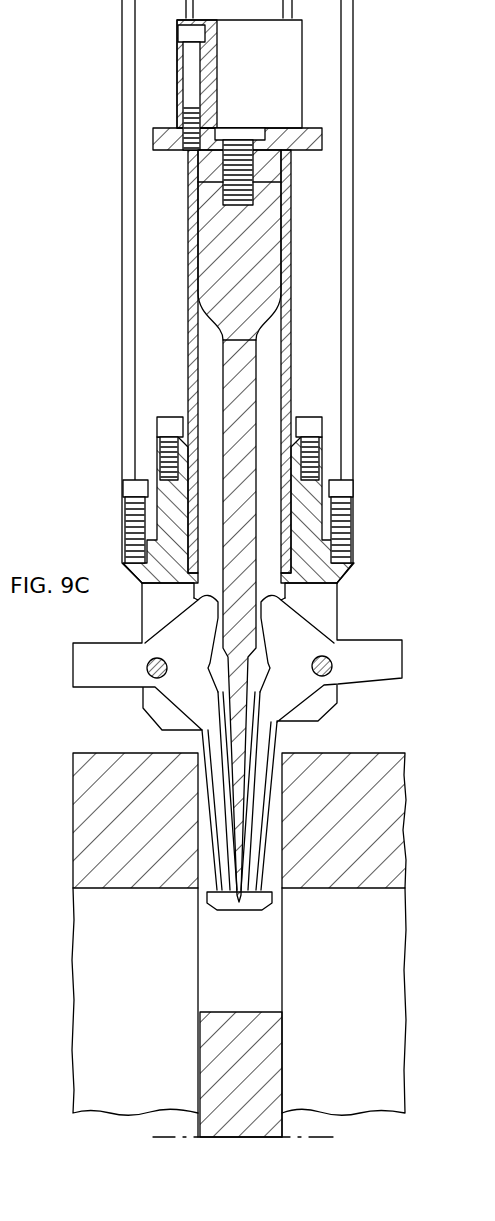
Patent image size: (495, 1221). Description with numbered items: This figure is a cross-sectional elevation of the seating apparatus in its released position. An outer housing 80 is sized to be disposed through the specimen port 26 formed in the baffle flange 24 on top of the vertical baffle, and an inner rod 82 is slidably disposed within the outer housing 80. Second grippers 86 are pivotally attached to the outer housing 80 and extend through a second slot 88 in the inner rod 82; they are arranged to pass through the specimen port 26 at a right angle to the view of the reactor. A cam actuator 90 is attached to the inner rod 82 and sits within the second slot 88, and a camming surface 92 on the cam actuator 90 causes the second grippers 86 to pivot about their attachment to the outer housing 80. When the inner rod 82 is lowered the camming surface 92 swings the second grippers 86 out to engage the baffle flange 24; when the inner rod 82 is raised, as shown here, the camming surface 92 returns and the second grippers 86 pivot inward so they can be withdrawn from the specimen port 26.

The baffle flange 24 is at (396, 752).
The specimen port 26 is at (292, 753).
The outer housing 80 is at (343, 334).
The inner rod 82 is at (267, 1075).
The second grippers 86 is at (106, 652).
The second slot 88 is at (292, 588).
The cam actuator 90 is at (272, 247).
The camming surface 92 is at (238, 626).